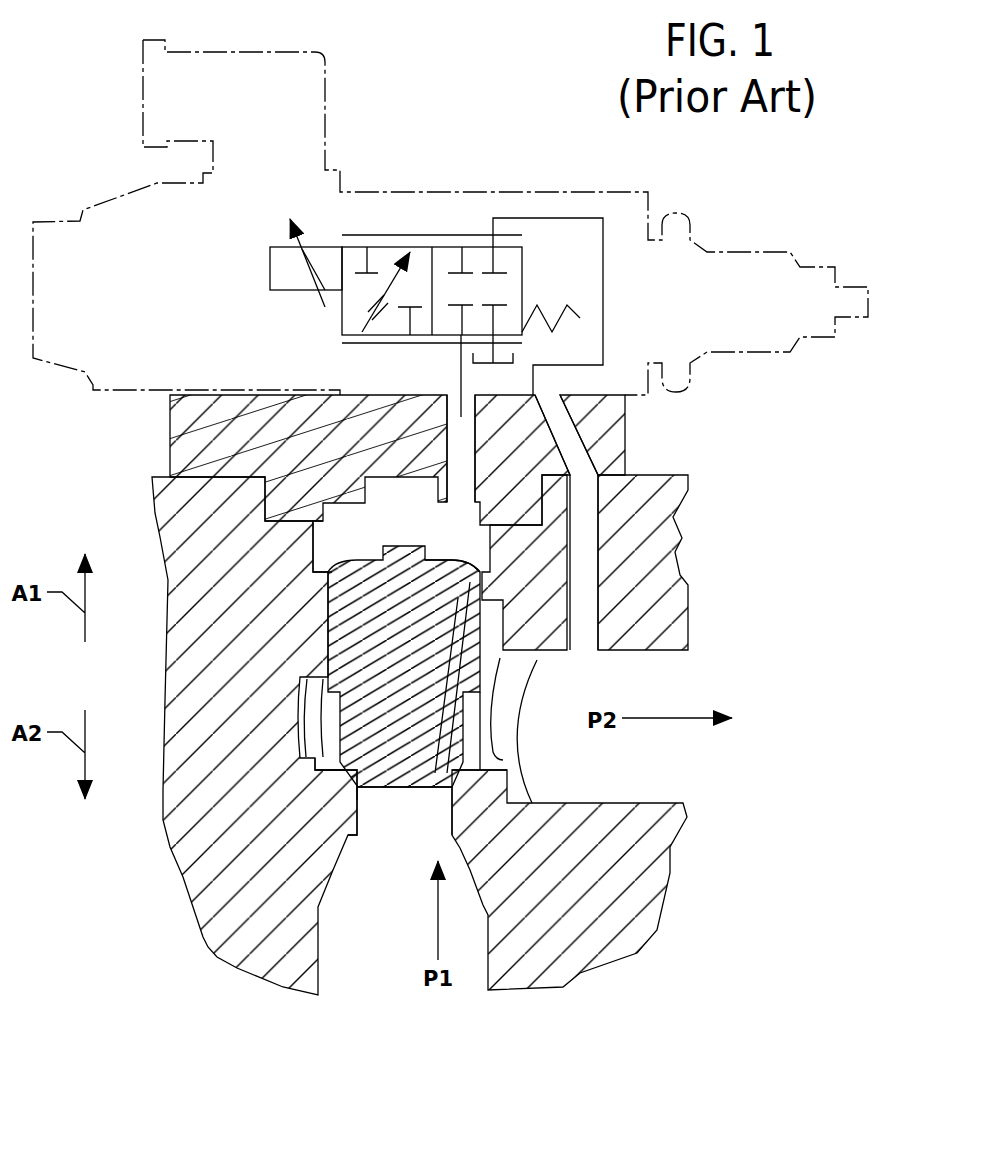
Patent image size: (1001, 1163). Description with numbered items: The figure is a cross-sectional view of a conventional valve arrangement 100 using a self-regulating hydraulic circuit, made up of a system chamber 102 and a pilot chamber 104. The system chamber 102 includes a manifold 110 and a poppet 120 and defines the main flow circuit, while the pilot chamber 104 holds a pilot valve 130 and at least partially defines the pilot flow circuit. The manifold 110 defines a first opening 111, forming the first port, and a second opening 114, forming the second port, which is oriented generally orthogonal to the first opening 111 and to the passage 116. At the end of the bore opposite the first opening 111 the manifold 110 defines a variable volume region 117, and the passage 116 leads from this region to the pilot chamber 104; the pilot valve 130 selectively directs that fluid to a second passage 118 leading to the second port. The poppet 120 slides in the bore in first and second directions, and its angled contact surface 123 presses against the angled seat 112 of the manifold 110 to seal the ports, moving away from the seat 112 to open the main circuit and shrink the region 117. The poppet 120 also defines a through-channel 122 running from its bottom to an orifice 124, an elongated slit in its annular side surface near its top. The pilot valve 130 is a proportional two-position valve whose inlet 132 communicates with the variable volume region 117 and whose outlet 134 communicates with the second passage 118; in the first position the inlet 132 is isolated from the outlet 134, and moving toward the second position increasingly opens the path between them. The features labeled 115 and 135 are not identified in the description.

The valve arrangement 100 is at (734, 513).
The system chamber 102 is at (345, 545).
The pilot chamber 104 is at (476, 216).
The manifold 110 is at (205, 940).
The first opening 111 is at (358, 802).
The angled seat 112 is at (357, 765).
The second opening 114 is at (493, 758).
The piston top face 115 is at (477, 572).
The passage 116 is at (452, 462).
The variable volume region 117 is at (385, 516).
The second passage 118 is at (586, 638).
The poppet 120 is at (385, 795).
The through-channel 122 is at (433, 745).
The angled contact surface 123 is at (460, 770).
The orifice 124 is at (468, 615).
The pilot valve 130 is at (374, 234).
The inlet 132 is at (458, 343).
The outlet 134 is at (493, 234).
The valve actuator 135 is at (270, 277).